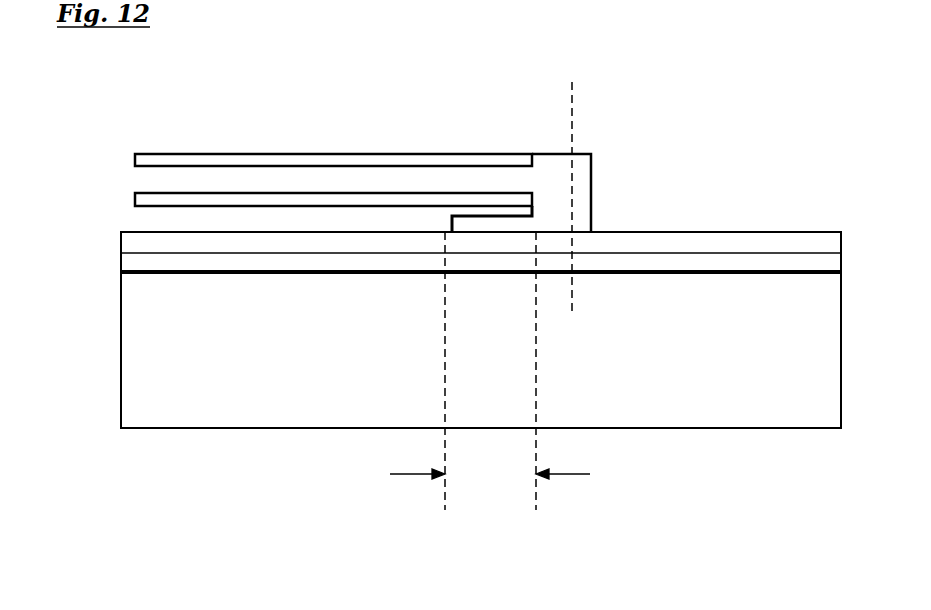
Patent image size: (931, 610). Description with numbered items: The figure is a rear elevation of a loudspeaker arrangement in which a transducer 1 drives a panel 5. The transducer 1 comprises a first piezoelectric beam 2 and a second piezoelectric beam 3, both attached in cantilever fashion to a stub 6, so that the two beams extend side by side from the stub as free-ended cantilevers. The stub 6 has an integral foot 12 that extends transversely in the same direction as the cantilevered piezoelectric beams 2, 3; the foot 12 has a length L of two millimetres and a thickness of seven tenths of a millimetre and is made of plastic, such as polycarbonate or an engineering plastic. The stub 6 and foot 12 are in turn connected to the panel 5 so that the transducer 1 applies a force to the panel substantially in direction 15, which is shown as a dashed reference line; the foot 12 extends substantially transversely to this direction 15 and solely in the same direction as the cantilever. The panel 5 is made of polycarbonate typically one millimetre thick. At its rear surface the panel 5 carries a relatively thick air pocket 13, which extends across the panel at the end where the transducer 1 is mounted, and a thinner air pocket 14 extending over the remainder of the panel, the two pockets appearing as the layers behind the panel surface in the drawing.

The transducer 1 is at (761, 143).
The first piezoelectric beam 2 is at (134, 198).
The second piezoelectric beam 3 is at (134, 158).
The panel 5 is at (140, 245).
The stub 6 is at (585, 175).
The foot 12 is at (468, 222).
The air pocket 13 is at (750, 330).
The thinner air pocket 14 is at (143, 261).
The direction 15 is at (578, 102).